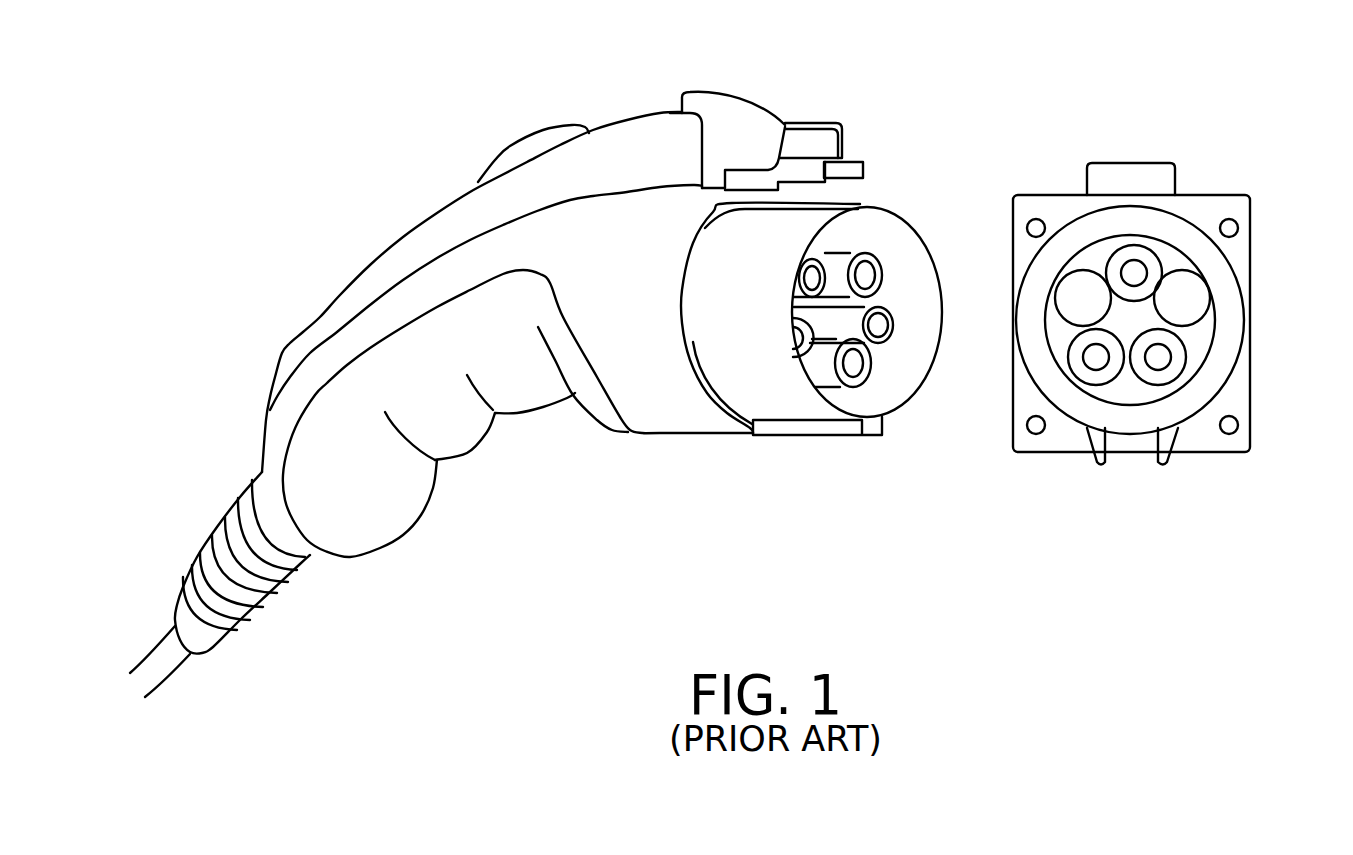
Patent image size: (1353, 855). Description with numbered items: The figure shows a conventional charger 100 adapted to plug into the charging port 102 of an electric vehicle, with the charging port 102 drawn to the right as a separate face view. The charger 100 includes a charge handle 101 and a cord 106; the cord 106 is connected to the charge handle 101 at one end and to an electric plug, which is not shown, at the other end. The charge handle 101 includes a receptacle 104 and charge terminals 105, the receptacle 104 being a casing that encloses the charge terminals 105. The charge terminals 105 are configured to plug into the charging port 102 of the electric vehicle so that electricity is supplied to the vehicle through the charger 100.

The charger 100 is at (305, 223).
The charge handle 101 is at (550, 237).
The charging port 102 is at (1253, 242).
The receptacle 104 is at (798, 212).
The charge terminals 105 is at (866, 276).
The cord 106 is at (185, 660).